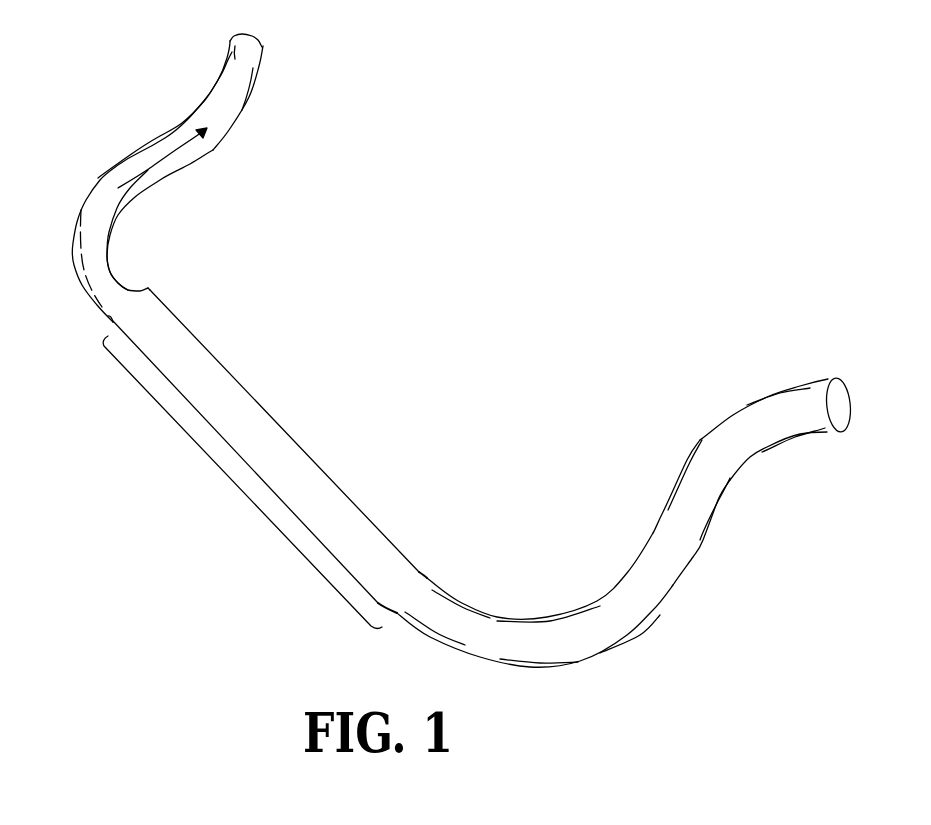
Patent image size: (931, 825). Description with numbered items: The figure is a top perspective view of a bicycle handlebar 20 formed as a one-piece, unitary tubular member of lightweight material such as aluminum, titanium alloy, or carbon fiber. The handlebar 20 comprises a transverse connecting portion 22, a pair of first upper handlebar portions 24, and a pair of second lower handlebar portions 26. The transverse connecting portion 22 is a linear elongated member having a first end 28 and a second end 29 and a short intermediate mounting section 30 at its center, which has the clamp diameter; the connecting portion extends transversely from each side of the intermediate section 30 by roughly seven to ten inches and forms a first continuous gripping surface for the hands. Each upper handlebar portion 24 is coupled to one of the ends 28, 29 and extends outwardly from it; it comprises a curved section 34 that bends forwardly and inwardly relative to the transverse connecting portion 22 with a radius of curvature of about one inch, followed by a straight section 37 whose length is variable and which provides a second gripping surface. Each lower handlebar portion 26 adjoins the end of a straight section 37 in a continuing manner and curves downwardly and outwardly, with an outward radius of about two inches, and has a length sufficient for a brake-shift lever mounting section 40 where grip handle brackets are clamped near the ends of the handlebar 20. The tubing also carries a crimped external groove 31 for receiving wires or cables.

The handlebar 20 is at (437, 360).
The transverse connecting portion 22 is at (270, 518).
The first upper handlebar portion 24 is at (207, 155).
The second lower handlebar portion 26 is at (272, 45).
The first end 28 is at (403, 617).
The second end 29 is at (115, 322).
The intermediate mounting section 30 is at (283, 443).
The crimped external groove 31 is at (108, 221).
The curved section 34 is at (132, 198).
The straight section 37 is at (163, 120).
The brake-shift lever mounting section 40 is at (228, 70).